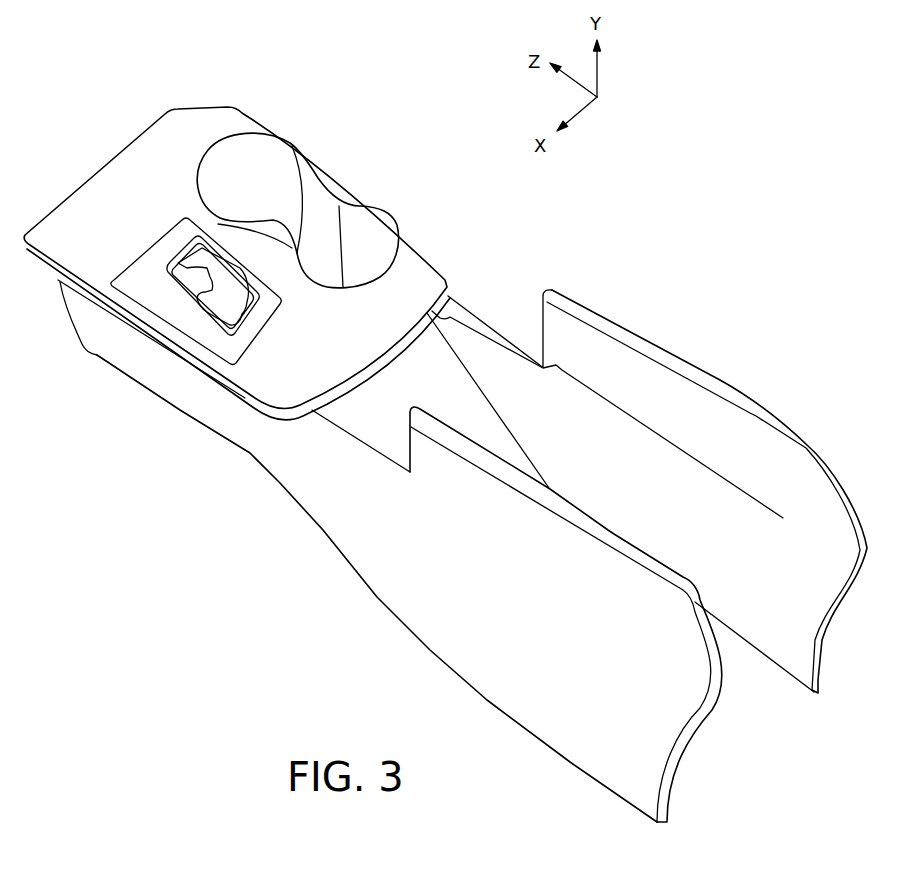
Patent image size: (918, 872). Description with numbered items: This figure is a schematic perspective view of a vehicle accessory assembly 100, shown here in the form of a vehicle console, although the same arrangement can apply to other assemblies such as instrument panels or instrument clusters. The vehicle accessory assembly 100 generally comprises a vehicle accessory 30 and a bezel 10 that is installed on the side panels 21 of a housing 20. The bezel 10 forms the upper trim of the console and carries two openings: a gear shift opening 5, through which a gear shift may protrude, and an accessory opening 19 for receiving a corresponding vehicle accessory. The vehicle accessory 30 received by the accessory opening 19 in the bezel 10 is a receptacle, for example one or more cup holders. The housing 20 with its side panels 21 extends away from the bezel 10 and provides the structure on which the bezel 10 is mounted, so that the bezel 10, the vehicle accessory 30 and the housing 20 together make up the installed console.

The vehicle accessory assembly 100 is at (663, 220).
The bezel 10 is at (113, 137).
The accessory opening 19 is at (272, 182).
The vehicle accessory 30 is at (370, 218).
The gear shift opening 5 is at (227, 300).
The housing 20 is at (488, 293).
The side panels 21 is at (703, 400).